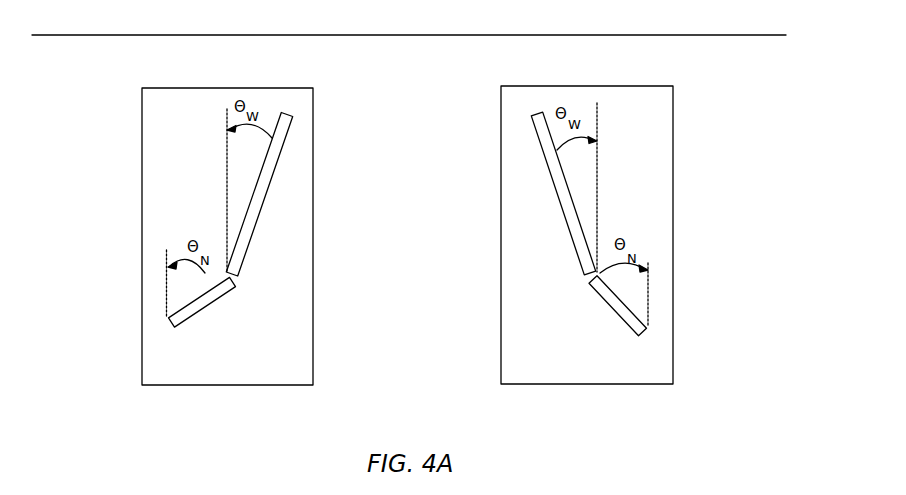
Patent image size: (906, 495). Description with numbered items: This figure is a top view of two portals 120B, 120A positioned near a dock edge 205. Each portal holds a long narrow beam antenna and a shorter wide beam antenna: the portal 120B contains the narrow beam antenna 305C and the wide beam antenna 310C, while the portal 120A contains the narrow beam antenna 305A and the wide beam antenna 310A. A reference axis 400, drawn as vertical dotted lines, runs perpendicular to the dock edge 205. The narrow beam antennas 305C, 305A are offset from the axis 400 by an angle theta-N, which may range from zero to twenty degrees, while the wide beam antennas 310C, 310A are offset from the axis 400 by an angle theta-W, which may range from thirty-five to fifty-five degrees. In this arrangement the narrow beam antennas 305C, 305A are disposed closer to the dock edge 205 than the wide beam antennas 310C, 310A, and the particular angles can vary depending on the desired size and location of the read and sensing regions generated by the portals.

The dock edge 205 is at (297, 34).
The portal 120B is at (142, 238).
The portal 120A is at (673, 238).
The narrow beam antenna 305C is at (281, 155).
The narrow beam antenna 305A is at (552, 183).
The wide beam antenna 310C is at (208, 306).
The wide beam antenna 310A is at (645, 330).
The reference axis 400 is at (166, 288).